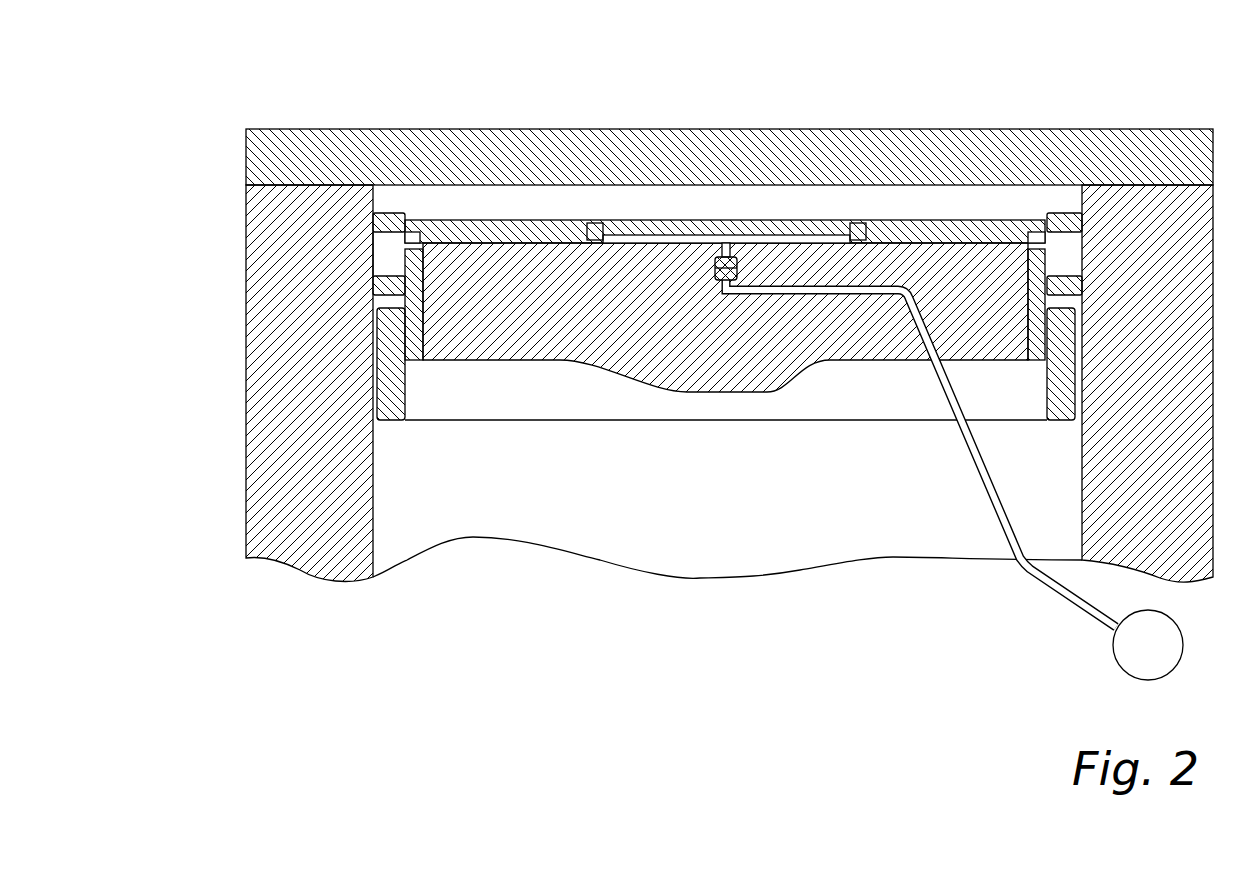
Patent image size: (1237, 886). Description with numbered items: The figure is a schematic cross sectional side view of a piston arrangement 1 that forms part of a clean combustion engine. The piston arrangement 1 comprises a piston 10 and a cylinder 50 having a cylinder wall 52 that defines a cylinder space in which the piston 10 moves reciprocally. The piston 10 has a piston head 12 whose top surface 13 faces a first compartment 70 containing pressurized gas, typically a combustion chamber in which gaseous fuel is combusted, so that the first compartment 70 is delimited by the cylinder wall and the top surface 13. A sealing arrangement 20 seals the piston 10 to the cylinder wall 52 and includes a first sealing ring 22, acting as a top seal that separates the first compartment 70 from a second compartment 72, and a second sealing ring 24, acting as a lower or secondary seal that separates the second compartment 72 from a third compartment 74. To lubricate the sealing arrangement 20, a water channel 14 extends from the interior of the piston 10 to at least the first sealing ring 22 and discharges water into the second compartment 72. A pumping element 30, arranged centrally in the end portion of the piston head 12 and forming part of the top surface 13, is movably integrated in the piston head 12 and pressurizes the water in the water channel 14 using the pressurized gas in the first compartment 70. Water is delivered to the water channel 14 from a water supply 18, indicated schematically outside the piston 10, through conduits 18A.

The piston arrangement 1 is at (670, 375).
The piston 10 is at (528, 333).
The piston head 12 is at (526, 228).
The top surface 13 is at (787, 221).
The water channel 14 is at (807, 238).
The water supply 18 is at (1105, 652).
The conduits 18A is at (965, 442).
The sealing arrangement 20 is at (331, 267).
The first sealing ring 22 is at (367, 224).
The second sealing ring 24 is at (370, 286).
The pumping element 30 is at (741, 222).
The cylinder 50 is at (276, 197).
The cylinder wall 52 is at (1080, 201).
The first compartment 70 is at (664, 200).
The second compartment 72 is at (366, 230).
The third compartment 74 is at (370, 307).